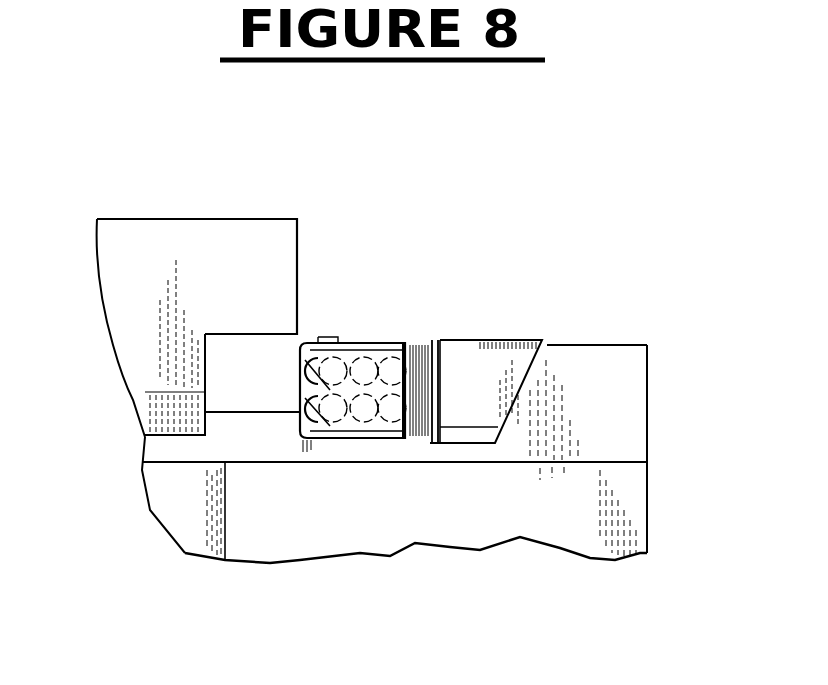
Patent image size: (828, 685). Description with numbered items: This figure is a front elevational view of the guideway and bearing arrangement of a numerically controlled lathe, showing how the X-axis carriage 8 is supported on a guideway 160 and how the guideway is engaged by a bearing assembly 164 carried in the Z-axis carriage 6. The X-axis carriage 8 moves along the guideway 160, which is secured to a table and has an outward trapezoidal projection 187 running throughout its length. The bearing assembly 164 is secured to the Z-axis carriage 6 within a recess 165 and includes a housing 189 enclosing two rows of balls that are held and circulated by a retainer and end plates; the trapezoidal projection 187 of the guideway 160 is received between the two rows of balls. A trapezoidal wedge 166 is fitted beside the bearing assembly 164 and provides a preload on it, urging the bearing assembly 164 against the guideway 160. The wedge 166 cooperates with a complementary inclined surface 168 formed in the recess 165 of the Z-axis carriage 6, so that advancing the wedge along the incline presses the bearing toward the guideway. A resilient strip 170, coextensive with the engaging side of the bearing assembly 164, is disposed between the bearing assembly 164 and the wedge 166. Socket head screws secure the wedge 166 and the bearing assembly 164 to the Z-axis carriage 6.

The Z-axis carriage 6 is at (600, 566).
The X-axis carriage 8 is at (126, 210).
The guideway 160 is at (218, 366).
The bearing assembly 164 is at (341, 328).
The recess 165 is at (458, 470).
The trapezoidal wedge 166 is at (500, 340).
The inclined surface 168 is at (528, 382).
The resilient strip 170 is at (437, 340).
The trapezoidal projection 187 is at (297, 396).
The housing 189 is at (386, 341).